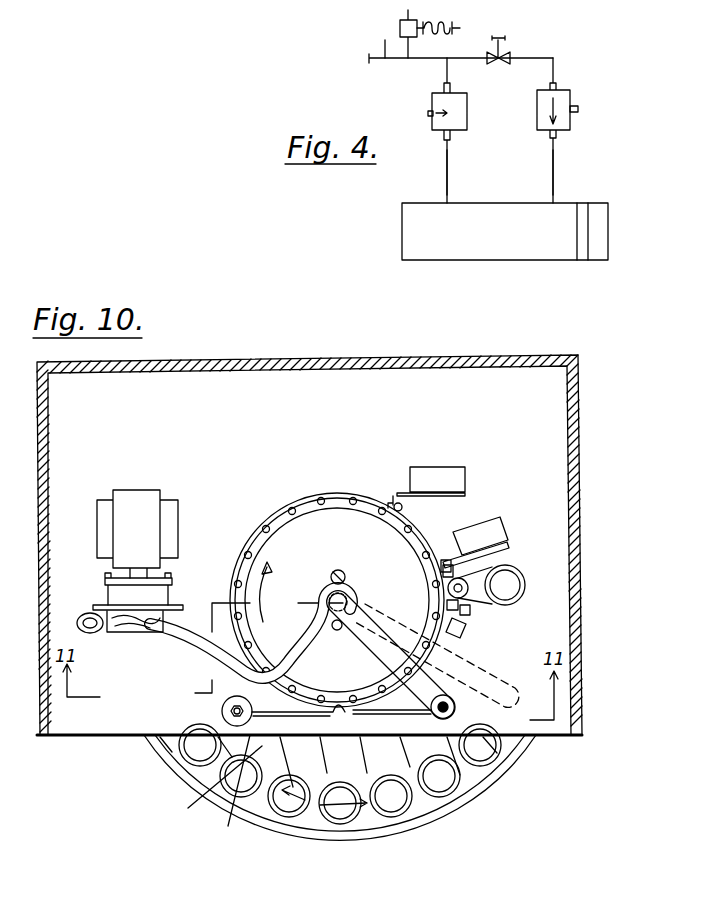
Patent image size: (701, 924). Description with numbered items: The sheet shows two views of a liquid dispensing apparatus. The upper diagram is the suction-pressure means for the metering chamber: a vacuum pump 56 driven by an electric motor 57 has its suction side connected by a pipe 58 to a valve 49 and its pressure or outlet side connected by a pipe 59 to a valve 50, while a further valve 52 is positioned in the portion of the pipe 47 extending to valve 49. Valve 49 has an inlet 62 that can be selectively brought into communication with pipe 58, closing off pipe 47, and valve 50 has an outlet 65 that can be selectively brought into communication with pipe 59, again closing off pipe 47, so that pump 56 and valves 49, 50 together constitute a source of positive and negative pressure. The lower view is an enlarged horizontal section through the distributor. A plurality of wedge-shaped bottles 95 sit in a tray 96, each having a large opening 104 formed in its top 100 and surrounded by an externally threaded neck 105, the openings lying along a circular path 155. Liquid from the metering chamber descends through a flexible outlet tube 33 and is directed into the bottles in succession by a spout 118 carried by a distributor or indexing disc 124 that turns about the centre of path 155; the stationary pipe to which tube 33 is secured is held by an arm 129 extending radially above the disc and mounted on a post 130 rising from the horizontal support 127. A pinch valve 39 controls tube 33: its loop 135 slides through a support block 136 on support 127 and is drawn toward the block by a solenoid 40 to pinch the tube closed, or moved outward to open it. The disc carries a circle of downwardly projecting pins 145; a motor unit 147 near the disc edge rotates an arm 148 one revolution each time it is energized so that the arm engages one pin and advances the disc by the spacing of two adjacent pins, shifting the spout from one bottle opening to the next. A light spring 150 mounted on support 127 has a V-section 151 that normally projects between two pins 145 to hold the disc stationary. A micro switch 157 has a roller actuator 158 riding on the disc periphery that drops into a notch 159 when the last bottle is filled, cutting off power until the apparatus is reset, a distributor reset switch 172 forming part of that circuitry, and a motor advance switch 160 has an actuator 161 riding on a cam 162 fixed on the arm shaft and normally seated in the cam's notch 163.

In FIG. 4, the pipe 47 is at (385, 42).
In FIG. 4, the valve 52 is at (503, 48).
In FIG. 4, the valve 50 is at (462, 115).
In FIG. 4, the outlet 65 is at (431, 113).
In FIG. 4, the pipe 59 is at (447, 168).
In FIG. 4, the valve 49 is at (571, 122).
In FIG. 4, the inlet 62 is at (575, 108).
In FIG. 4, the pipe 58 is at (553, 172).
In FIG. 4, the vacuum pump 56 is at (521, 246).
In FIG. 4, the electric motor 57 is at (594, 233).
In FIG. 10, the horizontal support 127 is at (116, 725).
In FIG. 10, the tray 96 is at (425, 803).
In FIG. 10, the opening 104 is at (197, 750).
In FIG. 10, the top 100 is at (207, 783).
In FIG. 10, the bottles 95 is at (225, 787).
In FIG. 10, the circular path 155 is at (340, 810).
In FIG. 10, the neck 105 is at (365, 810).
In FIG. 10, the distributor or indexing disc 124 is at (308, 528).
In FIG. 10, the pins 145 is at (347, 498).
In FIG. 10, the outlet tube 33 is at (207, 655).
In FIG. 10, the spout 118 is at (484, 668).
In FIG. 10, the arm 129 is at (385, 640).
In FIG. 10, the post 130 is at (456, 709).
In FIG. 10, the V-section 151 is at (337, 716).
In FIG. 10, the spring 150 is at (372, 714).
In FIG. 10, the solenoid 40 is at (135, 503).
In FIG. 10, the pinch valve 39 is at (152, 583).
In FIG. 10, the support block 136 is at (103, 607).
In FIG. 10, the loop 135 is at (140, 630).
In FIG. 10, the micro switch 157 is at (440, 480).
In FIG. 10, the roller actuator 158 is at (388, 498).
In FIG. 10, the notch 159 is at (405, 508).
In FIG. 10, the distributor reset switch 172 is at (490, 530).
In FIG. 10, the arm 148 is at (485, 556).
In FIG. 10, the motor unit 147 is at (512, 598).
In FIG. 10, the cam 162 is at (450, 583).
In FIG. 10, the notch 163 is at (447, 596).
In FIG. 10, the actuator 161 is at (464, 610).
In FIG. 10, the motor advance switch 160 is at (462, 634).